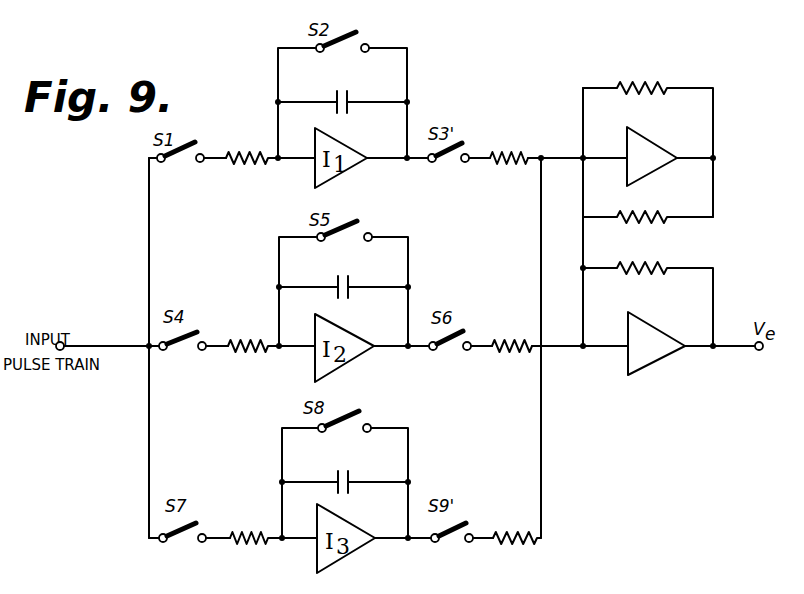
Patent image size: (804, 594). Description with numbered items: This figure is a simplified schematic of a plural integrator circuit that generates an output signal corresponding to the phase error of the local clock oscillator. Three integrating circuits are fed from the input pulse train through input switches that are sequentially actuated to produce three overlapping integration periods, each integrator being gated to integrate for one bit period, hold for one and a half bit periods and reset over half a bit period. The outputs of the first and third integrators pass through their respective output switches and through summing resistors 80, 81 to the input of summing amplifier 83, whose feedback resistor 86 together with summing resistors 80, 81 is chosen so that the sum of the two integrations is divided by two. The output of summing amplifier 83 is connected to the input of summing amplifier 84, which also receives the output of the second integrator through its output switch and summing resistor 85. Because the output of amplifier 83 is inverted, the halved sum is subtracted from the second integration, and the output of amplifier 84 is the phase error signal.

The summing resistor 80 is at (528, 140).
The summing resistor 81 is at (529, 512).
The summing amplifier 83 is at (690, 118).
The summing amplifier 84 is at (646, 367).
The summing resistor 85 is at (522, 320).
The feedback resistor 86 is at (668, 66).